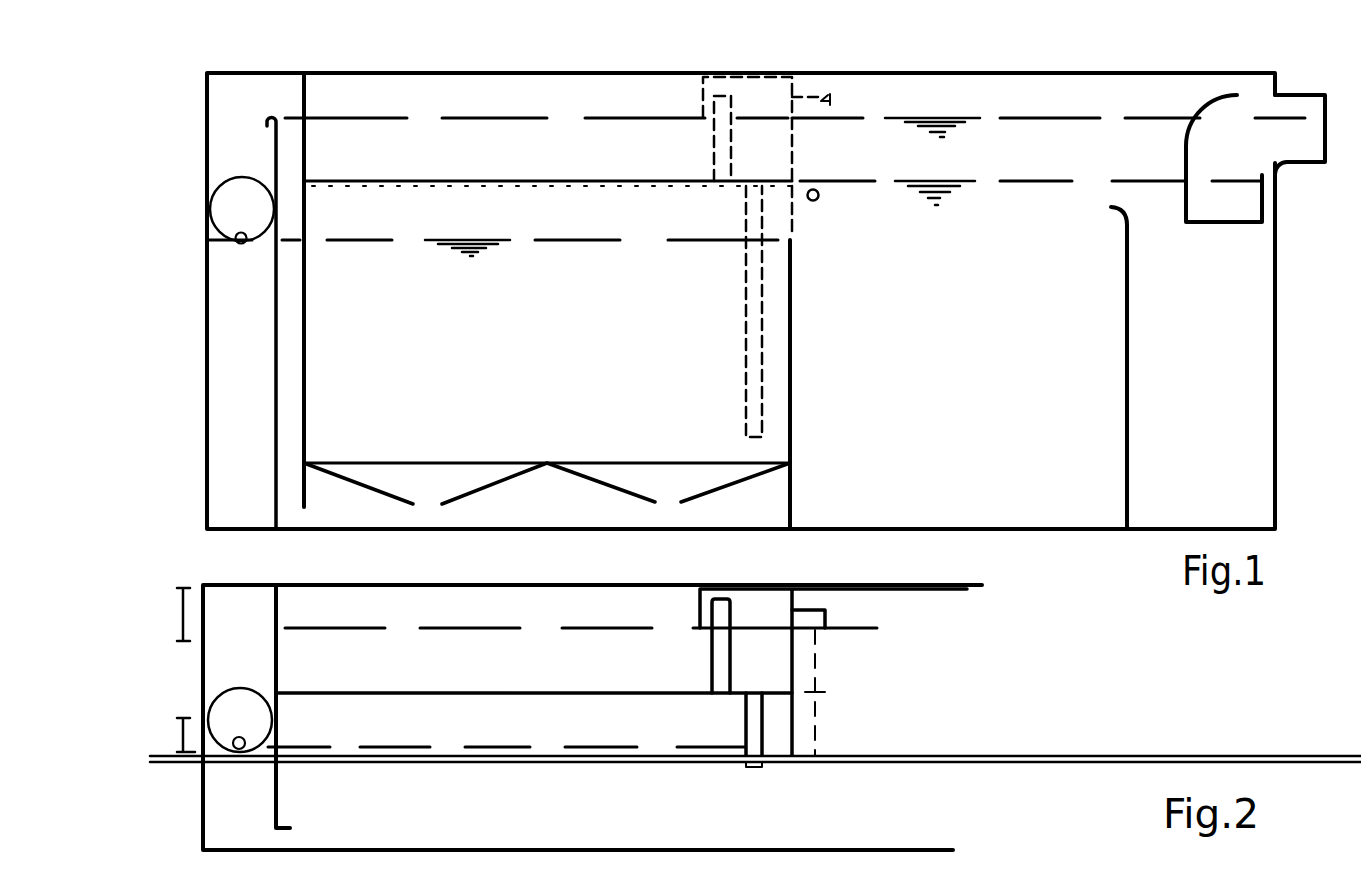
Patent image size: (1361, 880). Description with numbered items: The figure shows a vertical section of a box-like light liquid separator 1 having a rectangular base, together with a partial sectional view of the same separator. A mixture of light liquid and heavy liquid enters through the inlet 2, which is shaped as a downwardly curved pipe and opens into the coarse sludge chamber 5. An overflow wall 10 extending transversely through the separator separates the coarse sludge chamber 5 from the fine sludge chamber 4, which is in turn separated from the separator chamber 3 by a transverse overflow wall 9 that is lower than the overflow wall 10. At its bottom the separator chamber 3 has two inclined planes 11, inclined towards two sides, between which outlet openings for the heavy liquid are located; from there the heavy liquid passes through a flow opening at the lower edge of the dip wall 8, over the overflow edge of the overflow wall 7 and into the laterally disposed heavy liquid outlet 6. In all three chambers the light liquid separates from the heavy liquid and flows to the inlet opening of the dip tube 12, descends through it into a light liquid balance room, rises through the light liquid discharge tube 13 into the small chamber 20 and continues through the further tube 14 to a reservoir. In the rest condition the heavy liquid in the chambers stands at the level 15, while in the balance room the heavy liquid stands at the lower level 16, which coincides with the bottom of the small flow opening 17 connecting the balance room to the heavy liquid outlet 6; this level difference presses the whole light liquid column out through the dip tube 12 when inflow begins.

In FIG. 1, the light liquid separator 1 is at (1275, 376).
In FIG. 1, the inlet 2 is at (1298, 155).
In FIG. 1, the separator chamber 3 is at (654, 350).
In FIG. 1, the fine sludge chamber 4 is at (938, 367).
In FIG. 1, the coarse sludge chamber 5 is at (1185, 367).
In FIG. 1, the heavy liquid outlet 6 is at (233, 215).
In FIG. 2, the heavy liquid outlet 6 is at (240, 700).
In FIG. 1, the overflow wall 7 is at (276, 383).
In FIG. 1, the dip wall 8 is at (305, 335).
In FIG. 1, the overflow wall 9 is at (792, 432).
In FIG. 1, the overflow wall 10 is at (1126, 315).
In FIG. 1, the inclined planes 11 is at (478, 491).
In FIG. 1, the dip tube 12 is at (750, 279).
In FIG. 2, the dip tube 12 is at (747, 720).
In FIG. 1, the light liquid discharge tube 13 is at (722, 148).
In FIG. 2, the light liquid discharge tube 13 is at (717, 652).
In FIG. 1, the tube 14 is at (831, 101).
In FIG. 2, the tube 14 is at (828, 617).
In FIG. 1, the heavy liquid level 15 is at (495, 180).
In FIG. 2, the heavy liquid level 15 is at (484, 690).
In FIG. 1, the heavy liquid level 16 is at (462, 238).
In FIG. 2, the heavy liquid level 16 is at (505, 748).
In FIG. 1, the small flow opening 17 is at (243, 245).
In FIG. 2, the small flow opening 17 is at (245, 752).
In FIG. 1, the small chamber 20 is at (770, 92).
In FIG. 2, the small chamber 20 is at (757, 607).